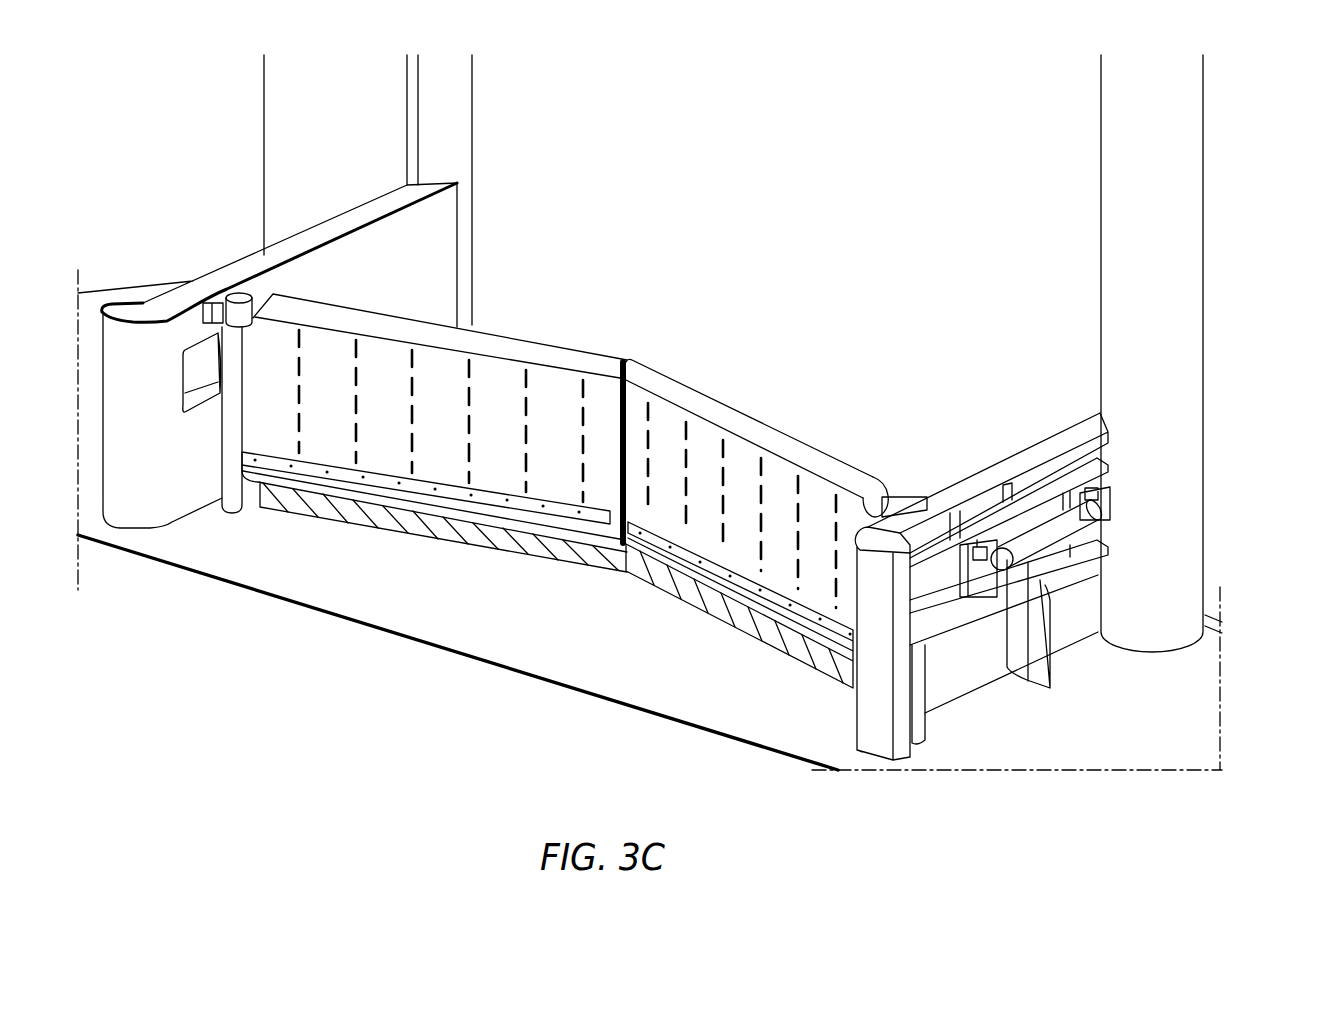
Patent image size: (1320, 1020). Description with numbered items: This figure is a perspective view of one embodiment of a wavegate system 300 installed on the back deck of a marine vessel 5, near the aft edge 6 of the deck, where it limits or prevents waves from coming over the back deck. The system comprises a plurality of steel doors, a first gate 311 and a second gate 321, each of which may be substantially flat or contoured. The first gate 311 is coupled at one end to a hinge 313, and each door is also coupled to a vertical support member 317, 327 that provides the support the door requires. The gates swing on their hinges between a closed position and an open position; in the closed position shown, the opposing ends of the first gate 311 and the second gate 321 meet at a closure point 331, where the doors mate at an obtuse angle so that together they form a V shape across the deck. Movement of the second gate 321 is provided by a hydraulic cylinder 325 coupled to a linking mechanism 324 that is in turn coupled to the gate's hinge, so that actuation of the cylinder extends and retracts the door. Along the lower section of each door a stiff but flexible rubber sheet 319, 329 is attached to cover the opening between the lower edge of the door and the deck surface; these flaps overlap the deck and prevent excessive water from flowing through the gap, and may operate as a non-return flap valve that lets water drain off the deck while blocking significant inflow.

The wavegate system 300 is at (833, 137).
The marine vessel 5 is at (547, 655).
The aft edge 6 is at (443, 648).
The vertical support member 317 is at (452, 97).
The hinge 313 is at (233, 483).
The first gate 311 is at (420, 472).
The rubber sheet 319 is at (290, 507).
The closure point 331 is at (633, 358).
The second gate 321 is at (713, 553).
The rubber sheet 329 is at (745, 625).
The linking mechanism 324 is at (913, 497).
The hydraulic cylinder 325 is at (1022, 553).
The vertical support member 327 is at (1193, 165).